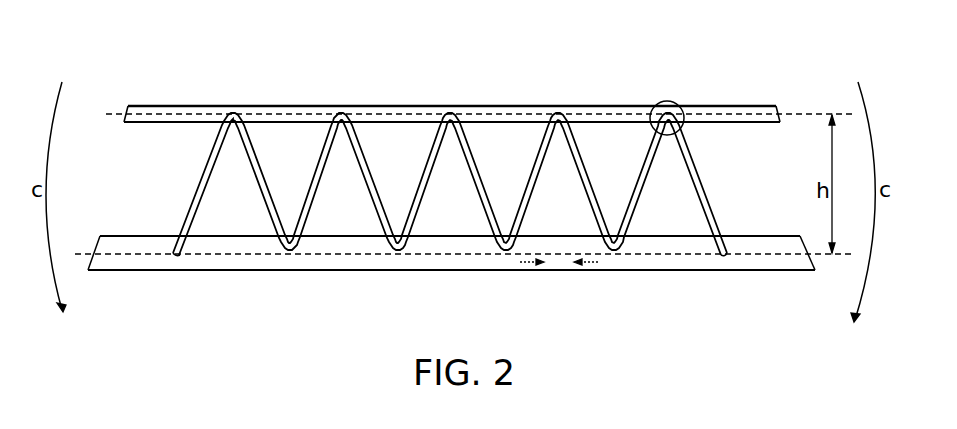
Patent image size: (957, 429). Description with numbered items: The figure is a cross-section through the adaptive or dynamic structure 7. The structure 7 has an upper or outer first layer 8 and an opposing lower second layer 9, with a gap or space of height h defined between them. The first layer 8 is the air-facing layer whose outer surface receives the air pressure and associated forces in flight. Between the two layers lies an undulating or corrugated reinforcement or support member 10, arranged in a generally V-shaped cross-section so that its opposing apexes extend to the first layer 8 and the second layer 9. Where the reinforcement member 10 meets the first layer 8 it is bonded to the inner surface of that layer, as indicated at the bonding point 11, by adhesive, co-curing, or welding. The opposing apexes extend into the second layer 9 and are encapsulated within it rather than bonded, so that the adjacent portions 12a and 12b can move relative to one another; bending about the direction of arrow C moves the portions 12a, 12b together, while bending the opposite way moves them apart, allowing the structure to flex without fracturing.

The structure 7 is at (127, 176).
The first layer 8 is at (213, 112).
The second layer 9 is at (340, 256).
The reinforcement member 10 is at (263, 162).
The bonding point 11 is at (670, 100).
The portion of reinforcement element 12a is at (612, 260).
The portion of reinforcement element 12b is at (505, 262).